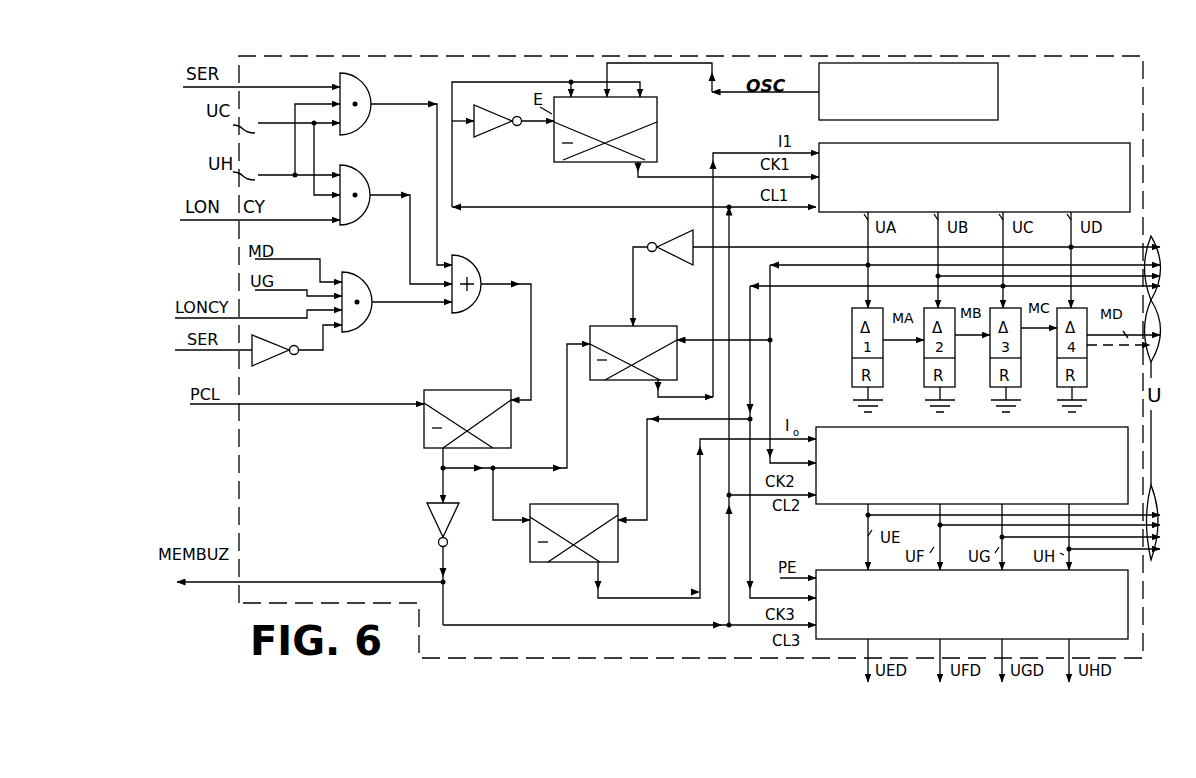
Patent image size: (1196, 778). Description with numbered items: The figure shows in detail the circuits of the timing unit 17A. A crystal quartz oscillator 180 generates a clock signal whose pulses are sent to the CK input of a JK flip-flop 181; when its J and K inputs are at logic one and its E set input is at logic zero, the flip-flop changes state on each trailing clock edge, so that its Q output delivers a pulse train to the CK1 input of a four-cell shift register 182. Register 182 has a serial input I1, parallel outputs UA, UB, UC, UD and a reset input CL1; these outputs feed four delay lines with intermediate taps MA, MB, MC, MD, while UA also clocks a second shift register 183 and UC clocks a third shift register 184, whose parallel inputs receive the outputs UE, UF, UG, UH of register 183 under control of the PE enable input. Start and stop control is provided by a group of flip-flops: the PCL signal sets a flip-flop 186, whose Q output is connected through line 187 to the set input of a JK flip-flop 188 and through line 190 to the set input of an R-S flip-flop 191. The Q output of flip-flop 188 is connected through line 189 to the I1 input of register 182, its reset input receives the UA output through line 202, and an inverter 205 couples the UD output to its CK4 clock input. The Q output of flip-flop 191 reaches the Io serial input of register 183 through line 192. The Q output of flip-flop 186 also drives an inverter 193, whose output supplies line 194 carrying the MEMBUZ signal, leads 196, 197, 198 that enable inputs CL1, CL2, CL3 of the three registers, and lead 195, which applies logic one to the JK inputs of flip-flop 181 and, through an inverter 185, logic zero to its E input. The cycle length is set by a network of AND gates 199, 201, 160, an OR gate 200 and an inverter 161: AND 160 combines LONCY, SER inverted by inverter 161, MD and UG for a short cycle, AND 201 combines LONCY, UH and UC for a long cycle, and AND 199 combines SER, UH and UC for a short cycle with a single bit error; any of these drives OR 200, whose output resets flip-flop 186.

The timing unit 17A is at (238, 473).
The AND gate 160 is at (362, 273).
The inverter 161 is at (272, 362).
The crystal quartz oscillator 180 is at (998, 87).
The JK flip-flop 181 is at (657, 142).
The shift register 182 is at (1072, 142).
The second shift register 183 is at (1089, 426).
The third shift register 184 is at (841, 568).
The inverter 185 is at (490, 137).
The flip-flop 186 is at (476, 386).
The line 187 is at (567, 447).
The JK flip-flop 188 is at (605, 322).
The line 189 is at (713, 300).
The line 190 is at (496, 490).
The R-S flip-flop 191 is at (597, 503).
The line 192 is at (646, 596).
The inverter 193 is at (428, 515).
The line 194 is at (368, 582).
The lead 195 is at (537, 207).
The lead 196 is at (754, 209).
The lead 197 is at (754, 499).
The lead 198 is at (752, 626).
The AND gate 199 is at (372, 93).
The OR gate 200 is at (488, 269).
The AND gate 201 is at (370, 172).
The line 202 is at (770, 337).
The inverter 205 is at (660, 242).